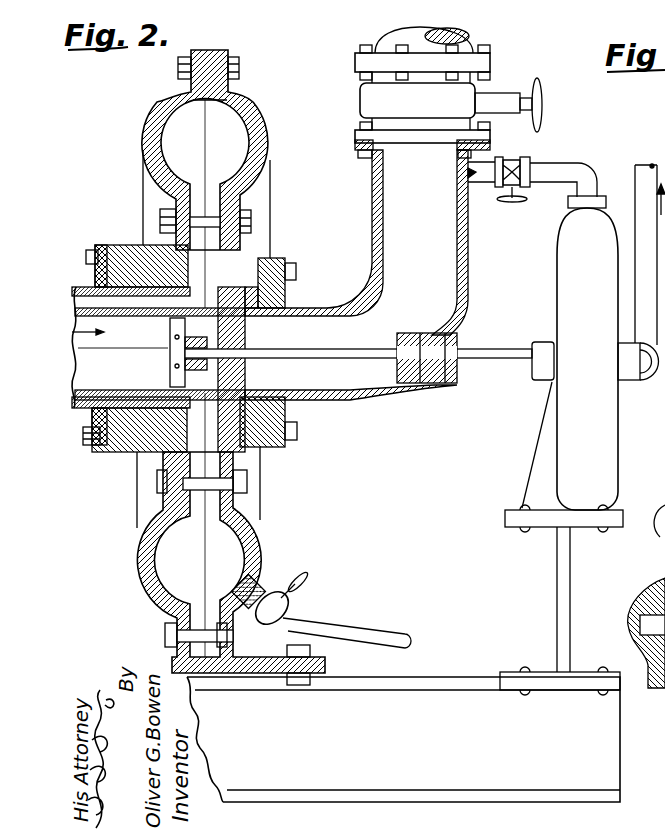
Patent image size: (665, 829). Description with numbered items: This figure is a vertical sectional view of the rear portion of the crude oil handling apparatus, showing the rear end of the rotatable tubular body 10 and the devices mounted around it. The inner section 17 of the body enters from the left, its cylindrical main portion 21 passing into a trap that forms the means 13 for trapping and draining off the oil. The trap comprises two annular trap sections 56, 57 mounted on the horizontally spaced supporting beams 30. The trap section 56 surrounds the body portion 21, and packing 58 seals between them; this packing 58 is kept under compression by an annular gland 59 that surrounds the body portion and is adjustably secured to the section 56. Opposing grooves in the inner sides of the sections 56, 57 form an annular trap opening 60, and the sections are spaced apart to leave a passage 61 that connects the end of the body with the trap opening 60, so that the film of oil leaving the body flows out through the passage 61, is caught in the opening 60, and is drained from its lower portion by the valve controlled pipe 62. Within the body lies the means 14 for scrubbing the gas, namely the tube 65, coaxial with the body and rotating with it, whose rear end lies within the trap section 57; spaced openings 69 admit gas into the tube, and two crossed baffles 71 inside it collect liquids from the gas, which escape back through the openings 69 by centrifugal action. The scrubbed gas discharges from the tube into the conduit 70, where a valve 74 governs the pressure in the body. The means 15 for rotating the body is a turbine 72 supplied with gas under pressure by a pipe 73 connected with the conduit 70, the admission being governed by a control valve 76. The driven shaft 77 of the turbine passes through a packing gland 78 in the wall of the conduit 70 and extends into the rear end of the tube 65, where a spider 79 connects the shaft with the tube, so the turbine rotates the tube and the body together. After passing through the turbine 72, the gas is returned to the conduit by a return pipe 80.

The rotatable tubular body 10 is at (78, 284).
The means for trapping and draining off the oil 13 is at (228, 552).
The means for scrubbing the gas 14 is at (76, 333).
The means for rotating the body 15 is at (548, 433).
The inner section of the body 17 is at (72, 292).
The cylindrical main portion 21 is at (74, 405).
The supporting beams 30 is at (403, 739).
The trap section 56 is at (178, 203).
The trap section 57 is at (232, 206).
The packing 58 is at (130, 450).
The annular gland 59 is at (93, 448).
The annular trap opening 60 is at (205, 150).
The passage 61 is at (212, 455).
The valve controlled conduit or pipe 62 is at (360, 640).
The tube 65 is at (135, 392).
The perforations or openings 69 is at (158, 315).
The pipe or conduit 70 is at (374, 235).
The baffles 71 is at (82, 350).
The turbine 72 is at (566, 289).
The pipe 73 is at (567, 175).
The valve 74 is at (492, 100).
The control valve 76 is at (512, 203).
The driven shaft 77 is at (504, 365).
The packing gland 78 is at (427, 385).
The spider 79 is at (190, 373).
The return pipe 80 is at (650, 166).